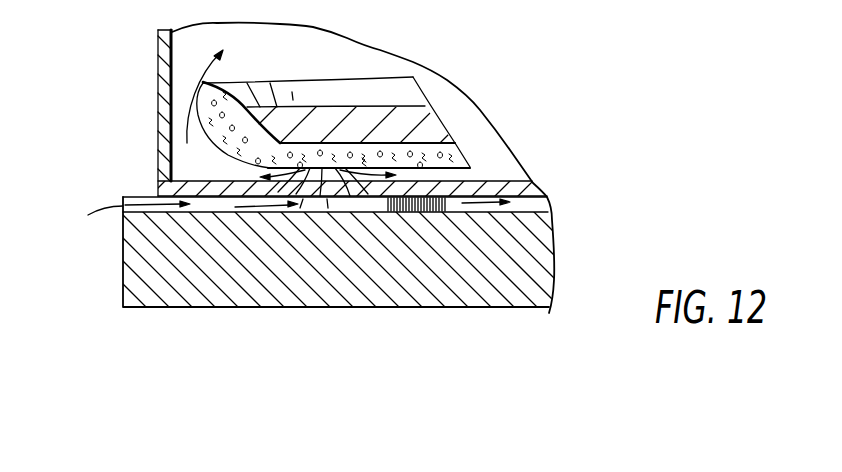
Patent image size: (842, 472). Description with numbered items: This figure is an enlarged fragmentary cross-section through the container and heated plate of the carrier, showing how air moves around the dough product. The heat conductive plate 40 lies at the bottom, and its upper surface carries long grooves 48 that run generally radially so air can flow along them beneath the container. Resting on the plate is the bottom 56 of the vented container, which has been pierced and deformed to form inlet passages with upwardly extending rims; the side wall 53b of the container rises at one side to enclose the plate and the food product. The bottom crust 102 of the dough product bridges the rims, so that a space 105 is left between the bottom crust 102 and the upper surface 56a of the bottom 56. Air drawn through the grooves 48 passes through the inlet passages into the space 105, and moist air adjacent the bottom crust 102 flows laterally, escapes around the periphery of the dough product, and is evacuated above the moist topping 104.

The heat conductive plate 40 is at (150, 247).
The long grooves 48 is at (550, 200).
The side wall 53b is at (158, 78).
The bottom 56 is at (515, 178).
The upper surface of bottom 56a is at (192, 184).
The bottom crust 102 is at (522, 178).
The moist topping 104 is at (413, 117).
The space 105 is at (458, 170).